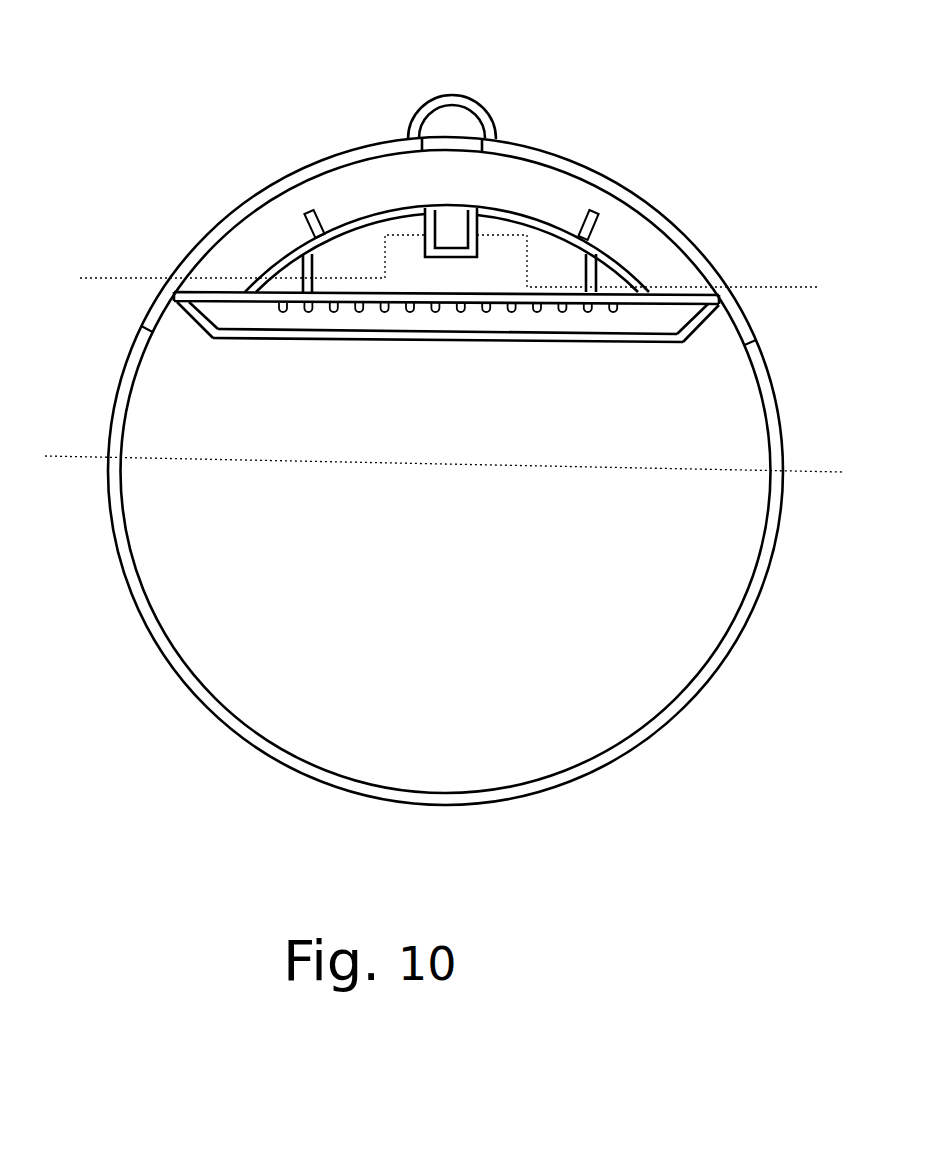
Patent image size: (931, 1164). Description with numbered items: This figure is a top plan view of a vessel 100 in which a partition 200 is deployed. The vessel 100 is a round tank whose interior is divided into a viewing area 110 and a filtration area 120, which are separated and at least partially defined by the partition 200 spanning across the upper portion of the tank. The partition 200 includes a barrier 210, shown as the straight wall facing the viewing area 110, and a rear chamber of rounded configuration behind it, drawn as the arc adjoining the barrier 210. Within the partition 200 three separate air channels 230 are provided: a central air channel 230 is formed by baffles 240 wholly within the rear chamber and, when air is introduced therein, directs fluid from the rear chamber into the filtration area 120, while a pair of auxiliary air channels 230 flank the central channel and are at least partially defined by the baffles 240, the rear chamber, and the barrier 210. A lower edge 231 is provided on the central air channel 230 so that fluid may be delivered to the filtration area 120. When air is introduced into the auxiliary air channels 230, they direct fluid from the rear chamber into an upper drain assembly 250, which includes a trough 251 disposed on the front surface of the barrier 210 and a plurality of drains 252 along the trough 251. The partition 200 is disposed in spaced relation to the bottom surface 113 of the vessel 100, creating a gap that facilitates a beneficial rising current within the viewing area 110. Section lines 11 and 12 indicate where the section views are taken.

The vessel 100 is at (112, 82).
The viewing area 110 is at (445, 477).
The bottom surface 113 is at (462, 661).
The filtration area 120 is at (582, 185).
The partition 200 is at (477, 281).
The barrier 210 is at (176, 304).
The air channel 230 is at (450, 207).
The lower edge 231 is at (462, 212).
The baffles 240 is at (320, 268).
The upper drain assembly 250 is at (448, 351).
The trough 251 is at (391, 326).
The drains 252 is at (617, 313).
The section line 11- 11 is at (45, 456).
The section line 12- 12 is at (80, 278).